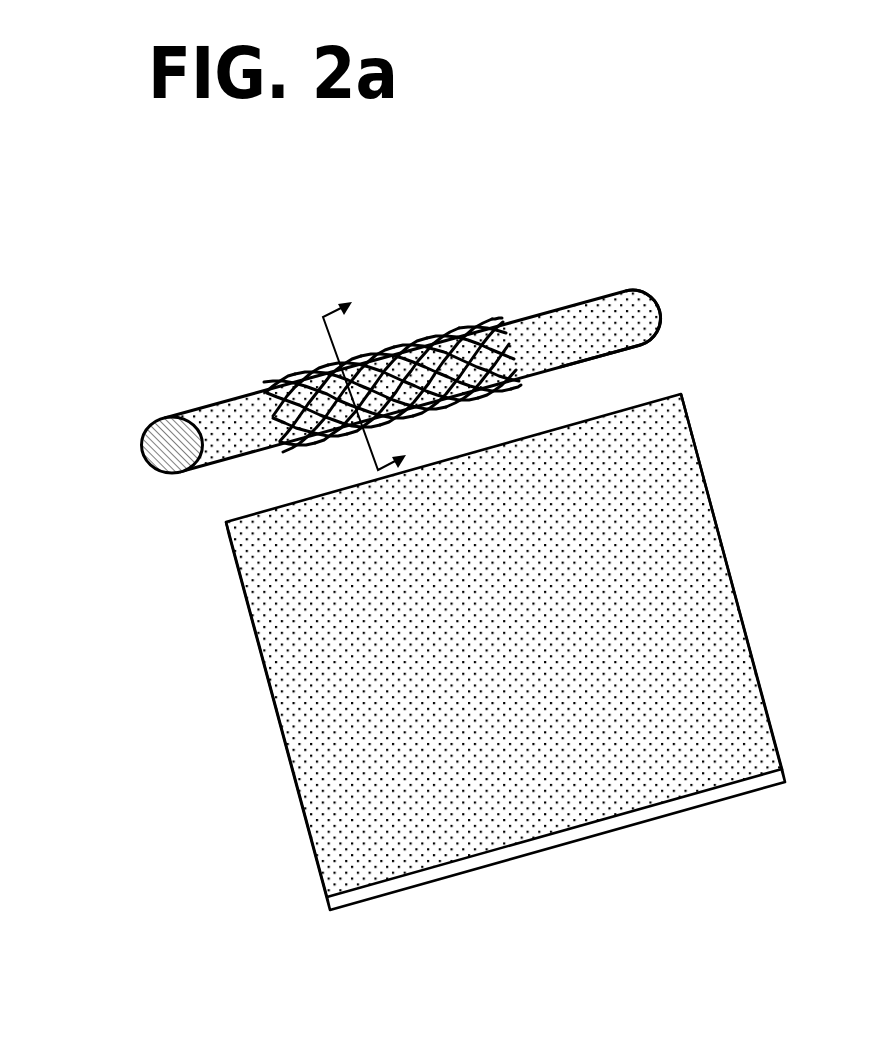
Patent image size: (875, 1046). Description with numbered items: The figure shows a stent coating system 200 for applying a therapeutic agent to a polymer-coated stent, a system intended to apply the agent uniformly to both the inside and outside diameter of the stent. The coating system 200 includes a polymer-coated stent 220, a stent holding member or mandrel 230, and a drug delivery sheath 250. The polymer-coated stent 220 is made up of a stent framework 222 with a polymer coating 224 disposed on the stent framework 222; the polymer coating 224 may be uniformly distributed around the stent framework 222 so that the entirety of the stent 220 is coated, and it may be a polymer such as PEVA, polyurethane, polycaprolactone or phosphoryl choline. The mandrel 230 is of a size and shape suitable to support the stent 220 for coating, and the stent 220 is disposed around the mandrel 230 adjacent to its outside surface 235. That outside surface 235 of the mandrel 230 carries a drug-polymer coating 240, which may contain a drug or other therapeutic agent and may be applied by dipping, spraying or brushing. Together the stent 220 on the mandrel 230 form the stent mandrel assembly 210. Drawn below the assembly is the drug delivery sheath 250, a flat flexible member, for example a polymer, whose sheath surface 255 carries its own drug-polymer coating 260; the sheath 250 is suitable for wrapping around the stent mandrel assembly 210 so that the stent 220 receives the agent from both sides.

The stent coating system 200 is at (136, 330).
The stent mandrel assembly 210 is at (530, 231).
The polymer-coated stent 220 is at (400, 340).
The stent framework 222 is at (273, 378).
The polymer coating 224 is at (318, 365).
The stent holding member (mandrel) 230 is at (540, 320).
The outside surface 235 is at (615, 338).
The drug-polymer coating 240 is at (642, 318).
The drug delivery sheath 250 is at (736, 579).
The sheath surface 255 is at (752, 684).
The drug-polymer coating 260 is at (686, 497).